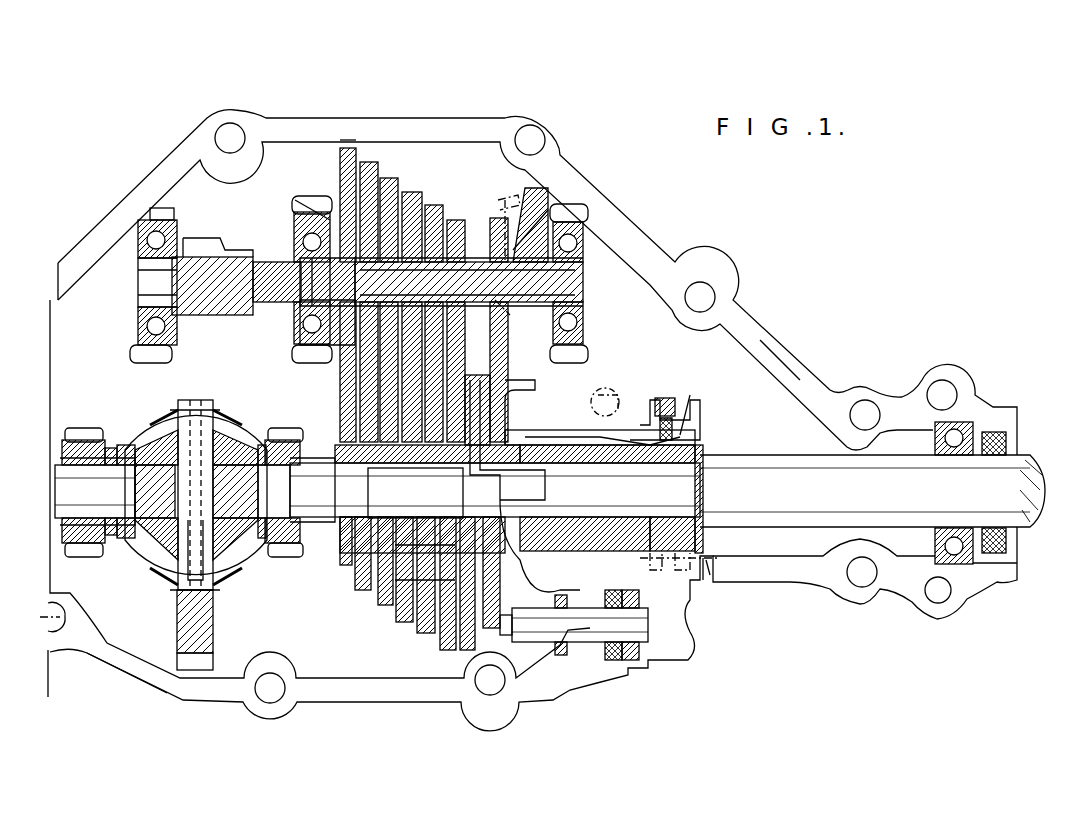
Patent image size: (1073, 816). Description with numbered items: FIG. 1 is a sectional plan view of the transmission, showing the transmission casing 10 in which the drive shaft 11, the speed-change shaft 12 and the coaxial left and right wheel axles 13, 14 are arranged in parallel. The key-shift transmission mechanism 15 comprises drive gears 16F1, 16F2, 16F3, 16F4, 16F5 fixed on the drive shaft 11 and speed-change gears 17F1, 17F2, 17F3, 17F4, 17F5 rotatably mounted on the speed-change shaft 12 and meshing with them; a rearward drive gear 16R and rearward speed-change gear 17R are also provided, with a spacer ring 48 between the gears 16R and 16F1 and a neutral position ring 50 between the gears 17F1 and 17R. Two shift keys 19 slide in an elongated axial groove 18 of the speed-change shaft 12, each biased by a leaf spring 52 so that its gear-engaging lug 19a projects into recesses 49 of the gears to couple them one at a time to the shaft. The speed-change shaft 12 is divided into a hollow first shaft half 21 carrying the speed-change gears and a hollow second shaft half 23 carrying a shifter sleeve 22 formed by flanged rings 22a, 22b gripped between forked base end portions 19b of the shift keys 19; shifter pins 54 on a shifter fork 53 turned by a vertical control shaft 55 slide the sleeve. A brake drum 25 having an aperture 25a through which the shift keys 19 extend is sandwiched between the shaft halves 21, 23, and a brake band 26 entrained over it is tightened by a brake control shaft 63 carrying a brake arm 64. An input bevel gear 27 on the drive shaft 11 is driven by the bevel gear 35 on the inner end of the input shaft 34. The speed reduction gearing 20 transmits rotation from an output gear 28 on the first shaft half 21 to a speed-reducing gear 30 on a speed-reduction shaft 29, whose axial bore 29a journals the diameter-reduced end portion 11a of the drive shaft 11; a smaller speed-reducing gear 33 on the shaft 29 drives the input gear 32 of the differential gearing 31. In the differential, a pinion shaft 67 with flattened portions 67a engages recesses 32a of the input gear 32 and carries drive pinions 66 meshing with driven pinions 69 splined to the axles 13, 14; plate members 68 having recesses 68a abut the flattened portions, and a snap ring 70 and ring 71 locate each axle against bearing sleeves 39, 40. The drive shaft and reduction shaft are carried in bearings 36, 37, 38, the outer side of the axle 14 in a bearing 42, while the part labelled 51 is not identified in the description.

The transmission casing 10 is at (330, 695).
The drive shaft 11 is at (585, 290).
The diameter-reduced end portion 11a is at (330, 345).
The speed-change shaft 12 is at (395, 610).
The left wheel axle 13 is at (78, 440).
The right wheel axle 14 is at (778, 470).
The key-shift transmission mechanism 15 is at (412, 644).
The first speed drive gear 16F1 is at (455, 220).
The second speed drive gear 16F2 is at (414, 192).
The third speed drive gear 16F3 is at (390, 178).
The fourth speed drive gear 16F4 is at (368, 162).
The fifth speed drive gear 16F5 is at (348, 148).
The rearward drive gear 16R is at (500, 218).
The first speed speed-change gear 17F1 is at (470, 650).
The second speed speed-change gear 17F2 is at (428, 633).
The third speed speed-change gear 17F3 is at (405, 622).
The fourth speed speed-change gear 17F4 is at (385, 606).
The fifth speed speed-change gear 17F5 is at (360, 590).
The rearward speed-change gear 17R is at (493, 628).
The elongated axial groove 18 is at (488, 460).
The shift key 19 is at (640, 425).
The gear-engaging lug 19a is at (529, 412).
The forked base end portions 19b is at (700, 430).
The speed reduction gearing 20 is at (245, 222).
The first shaft half 21 is at (405, 540).
The shifter sleeve 22 is at (688, 570).
The flanged ring 22a is at (655, 548).
The flanged ring 22b is at (685, 545).
The second shaft half 23 is at (585, 530).
The brake drum 25 is at (505, 580).
The aperture 25a is at (520, 448).
The brake band 26 is at (580, 340).
The input bevel gear 27 is at (540, 200).
The output gear 28 is at (340, 560).
The speed-reduction shaft 29 is at (268, 300).
The axial bore 29a is at (305, 268).
The speed-reducing gear 30 is at (342, 148).
The differential gearing 31 is at (130, 650).
The input gear 32 is at (195, 668).
The recesses 32a is at (215, 380).
The smaller speed-reducing gear 33 is at (203, 238).
The input shaft 34 is at (520, 185).
The bevel gear 35 is at (512, 140).
The bearing 36 is at (625, 218).
The bearing 37 is at (300, 330).
The bearing 38 is at (150, 215).
The bearing sleeve 39 is at (106, 440).
The bearing sleeve 40 is at (311, 490).
The bearing 42 is at (920, 425).
The spacer ring 48 is at (467, 283).
The recesses 49 is at (445, 455).
The neutral position ring 50 is at (468, 420).
The clutch collar 51 is at (490, 540).
The leaf spring 52 is at (565, 455).
The shifter fork 53 is at (668, 398).
The shifter pins 54 is at (675, 425).
The control shaft 55 is at (612, 388).
The brake control shaft 63 is at (595, 640).
The brake arm 64 is at (642, 665).
The drive pinions 66 is at (145, 430).
The pinion shaft 67 is at (165, 570).
The flattened portions 67a is at (166, 491).
The plate members 68 is at (195, 493).
The recess 68a is at (200, 551).
The driven pinions 69 is at (125, 540).
The snap ring 70 is at (118, 440).
The ring 71 is at (290, 448).